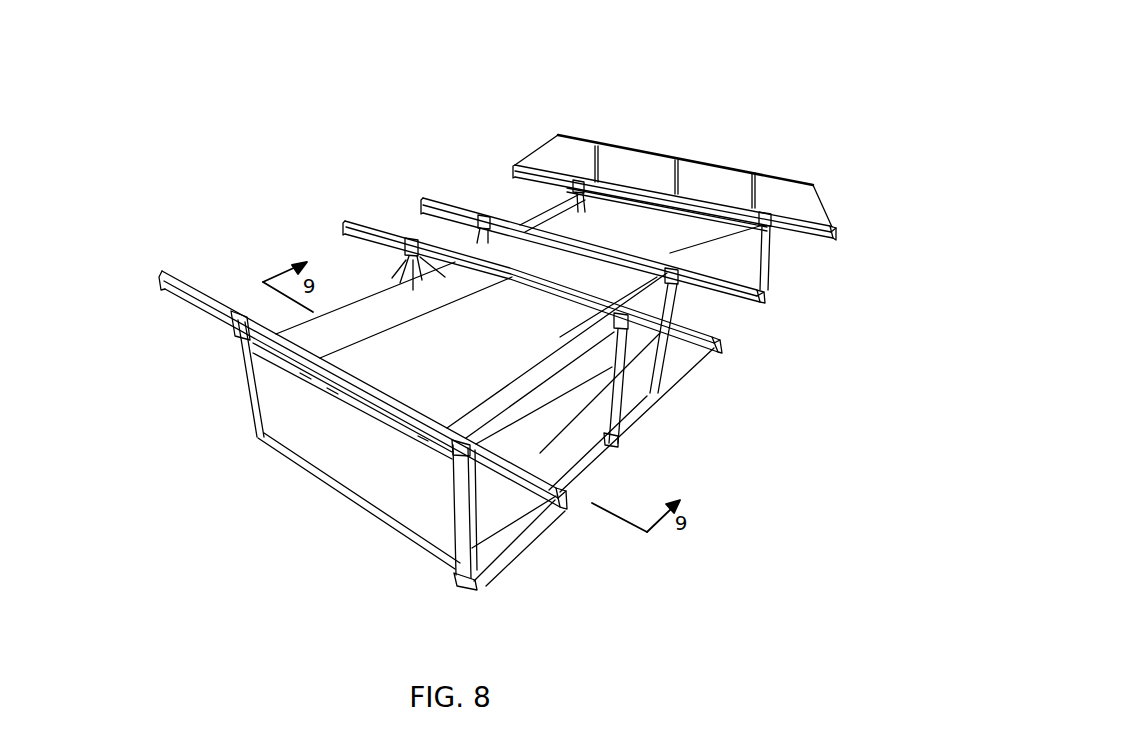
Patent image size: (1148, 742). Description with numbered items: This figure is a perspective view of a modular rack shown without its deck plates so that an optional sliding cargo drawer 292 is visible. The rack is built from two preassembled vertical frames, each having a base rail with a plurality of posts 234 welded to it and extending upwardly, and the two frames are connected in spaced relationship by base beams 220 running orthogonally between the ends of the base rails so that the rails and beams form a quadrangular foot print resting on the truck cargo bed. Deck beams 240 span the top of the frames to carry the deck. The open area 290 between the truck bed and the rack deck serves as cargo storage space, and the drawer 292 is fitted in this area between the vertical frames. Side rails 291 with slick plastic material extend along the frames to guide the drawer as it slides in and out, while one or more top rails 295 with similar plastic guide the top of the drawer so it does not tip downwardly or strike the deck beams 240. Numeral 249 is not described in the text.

The base beam 220 is at (293, 460).
The post 234 is at (237, 390).
The deck beam 240 is at (815, 242).
The front rail 249 is at (567, 517).
The area 290 is at (480, 330).
The side rail 291 is at (490, 500).
The sliding storage container or drawer 292 is at (387, 476).
The top rail 295 is at (410, 283).